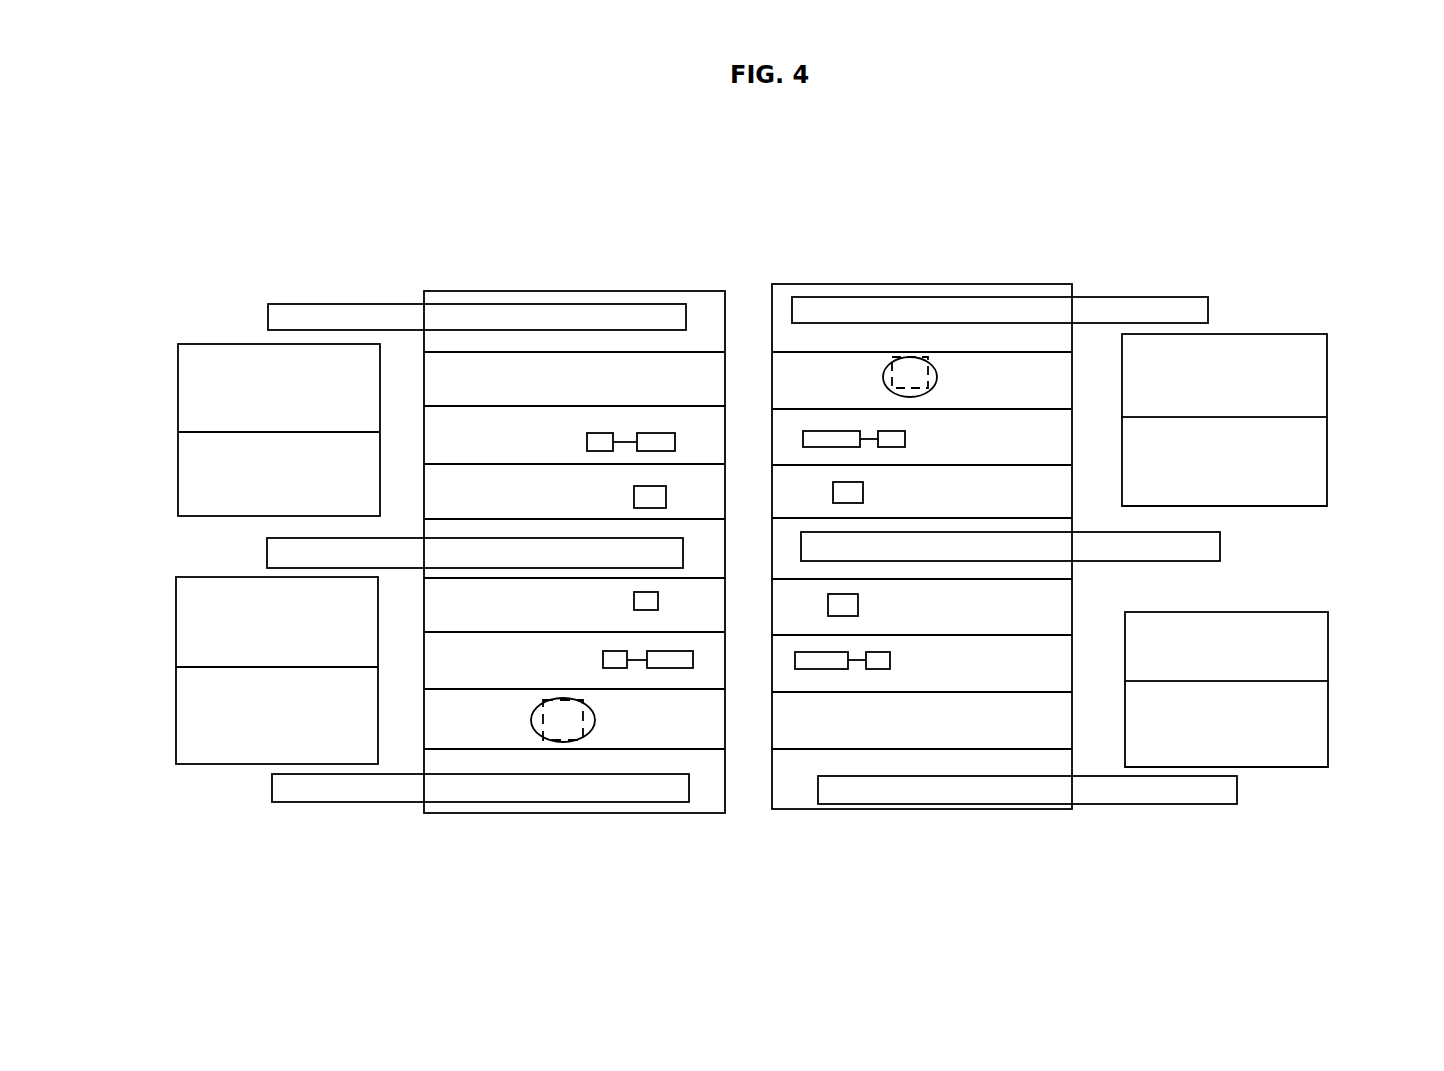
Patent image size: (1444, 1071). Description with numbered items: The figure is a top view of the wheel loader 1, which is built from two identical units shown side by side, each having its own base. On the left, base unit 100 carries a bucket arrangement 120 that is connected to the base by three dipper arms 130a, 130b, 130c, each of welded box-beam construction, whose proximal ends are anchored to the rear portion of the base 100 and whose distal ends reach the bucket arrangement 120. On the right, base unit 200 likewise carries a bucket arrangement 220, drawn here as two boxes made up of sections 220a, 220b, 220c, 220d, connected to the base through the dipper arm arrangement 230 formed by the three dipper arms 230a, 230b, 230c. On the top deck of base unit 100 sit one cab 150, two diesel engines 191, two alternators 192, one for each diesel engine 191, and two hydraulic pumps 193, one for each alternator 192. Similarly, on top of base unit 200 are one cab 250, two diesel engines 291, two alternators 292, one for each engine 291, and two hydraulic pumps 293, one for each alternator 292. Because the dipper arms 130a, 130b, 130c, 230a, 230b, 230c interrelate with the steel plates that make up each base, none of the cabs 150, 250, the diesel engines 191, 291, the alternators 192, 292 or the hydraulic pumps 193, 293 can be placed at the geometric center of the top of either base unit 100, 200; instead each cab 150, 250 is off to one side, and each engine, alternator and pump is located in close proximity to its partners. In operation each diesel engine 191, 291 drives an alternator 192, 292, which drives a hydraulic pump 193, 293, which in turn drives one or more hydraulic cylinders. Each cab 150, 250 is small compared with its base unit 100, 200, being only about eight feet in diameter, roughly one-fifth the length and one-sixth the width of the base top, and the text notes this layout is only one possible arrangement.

The wheel loader 1 is at (745, 207).
The base 100 is at (514, 290).
The bucket arrangement 120 is at (212, 360).
The dipper arm 130a is at (341, 790).
The dipper arm 130b is at (290, 552).
The dipper arm 130c is at (298, 318).
The cab 150 is at (563, 722).
The diesel engine 191 is at (660, 433).
The alternator 192 is at (587, 442).
The hydraulic pump 193 is at (634, 496).
The base 200 is at (815, 285).
The bucket arrangement 220 is at (1275, 337).
The sheet feeding cassette 220a is at (1330, 720).
The sheet feeding cassette 220b is at (1330, 648).
The sheet feeding cassette 220c is at (1328, 472).
The sheet feeding cassette 220d is at (1328, 370).
The dipper arm arrangement 230 is at (1014, 312).
The dipper arm 230a is at (1196, 790).
The dipper arm 230b is at (1190, 545).
The dipper arm 230c is at (1125, 312).
The cab 250 is at (908, 355).
The diesel engine 291 is at (835, 431).
The alternator 292 is at (905, 440).
The hydraulic pump 293 is at (863, 494).